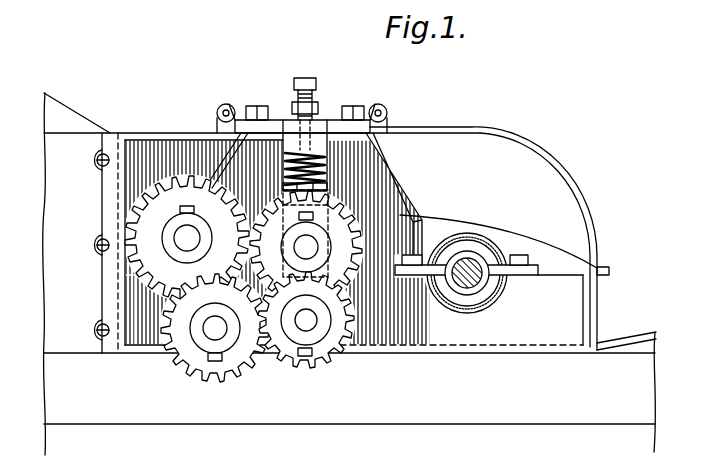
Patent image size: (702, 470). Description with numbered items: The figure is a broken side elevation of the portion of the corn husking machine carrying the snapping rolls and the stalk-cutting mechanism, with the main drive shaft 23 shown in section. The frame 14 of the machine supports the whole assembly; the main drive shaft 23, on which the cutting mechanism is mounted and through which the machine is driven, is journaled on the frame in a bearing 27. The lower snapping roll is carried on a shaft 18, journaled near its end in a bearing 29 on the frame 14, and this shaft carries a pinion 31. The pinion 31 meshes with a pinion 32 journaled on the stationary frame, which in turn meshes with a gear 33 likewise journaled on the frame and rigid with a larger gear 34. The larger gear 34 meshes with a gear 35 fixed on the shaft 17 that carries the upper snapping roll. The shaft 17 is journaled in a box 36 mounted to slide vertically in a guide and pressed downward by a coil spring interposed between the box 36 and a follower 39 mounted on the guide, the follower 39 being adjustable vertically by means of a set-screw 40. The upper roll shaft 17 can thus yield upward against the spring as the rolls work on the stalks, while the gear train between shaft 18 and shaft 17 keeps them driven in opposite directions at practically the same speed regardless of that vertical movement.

The frame 14 is at (472, 411).
The shaft 17 is at (309, 247).
The shaft 18 is at (308, 322).
The shaft 23 is at (470, 262).
The bearing 27 is at (463, 235).
The bearing 29 is at (295, 338).
The pinion 31 is at (321, 364).
The pinion 32 is at (196, 366).
The gear 33 is at (140, 222).
The larger gear 34 is at (130, 270).
The gear 35 is at (362, 232).
The box 36 is at (330, 214).
The follower 39 is at (290, 147).
The set-screw 40 is at (317, 84).